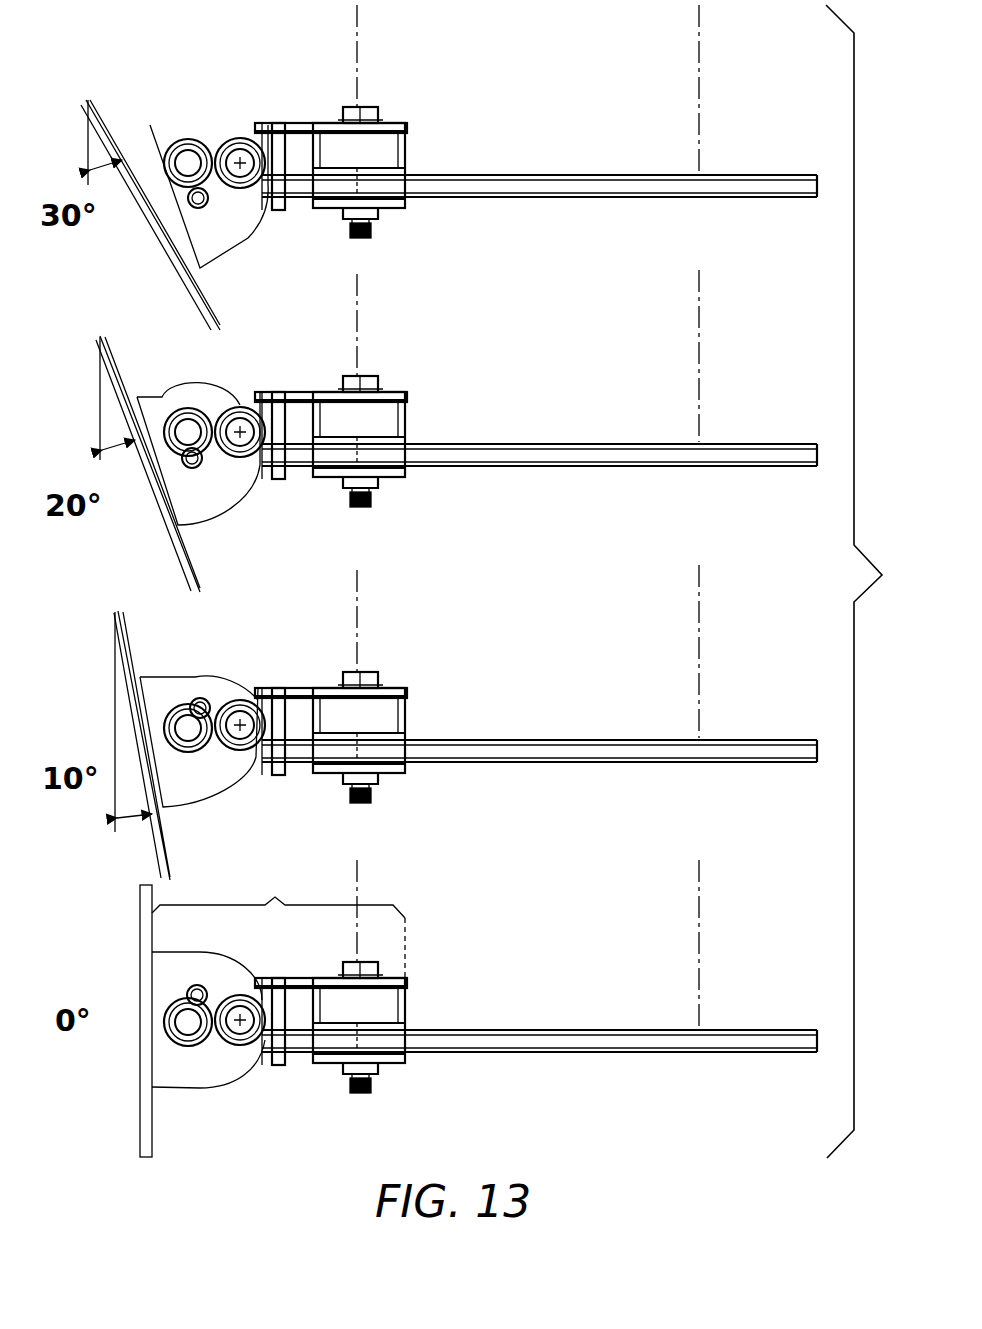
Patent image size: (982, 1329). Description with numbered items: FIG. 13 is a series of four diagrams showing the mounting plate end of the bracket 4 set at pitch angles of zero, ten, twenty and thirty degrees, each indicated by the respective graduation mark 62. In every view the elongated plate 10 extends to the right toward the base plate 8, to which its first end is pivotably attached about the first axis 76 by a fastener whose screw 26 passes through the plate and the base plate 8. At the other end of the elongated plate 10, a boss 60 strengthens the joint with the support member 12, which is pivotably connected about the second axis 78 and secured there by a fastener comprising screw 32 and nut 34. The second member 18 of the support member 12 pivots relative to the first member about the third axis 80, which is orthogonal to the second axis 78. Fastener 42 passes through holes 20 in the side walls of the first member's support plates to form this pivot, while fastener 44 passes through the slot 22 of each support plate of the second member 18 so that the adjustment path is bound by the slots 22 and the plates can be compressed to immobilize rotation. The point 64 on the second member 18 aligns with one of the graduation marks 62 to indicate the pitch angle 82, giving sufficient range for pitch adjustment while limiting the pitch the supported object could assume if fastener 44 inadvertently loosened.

The bracket 4 is at (527, 130).
The base plate 8 is at (268, 892).
The elongated plate 10 is at (608, 174).
The support member 12 is at (270, 212).
The second member 18 is at (347, 97).
The hole 20 is at (232, 128).
The slot 22 is at (192, 212).
The screw 26 is at (220, 293).
The screw 32 is at (360, 107).
The nut 34 is at (375, 210).
The fastener 42 is at (243, 140).
The fastener 44 is at (188, 140).
The boss 60 is at (406, 152).
The graduation marks 62 is at (283, 170).
The point 64 is at (265, 138).
The first axis 76 is at (700, 25).
The second axis 78 is at (360, 18).
The third axis 80 is at (232, 178).
The pitch angle 82 is at (105, 167).